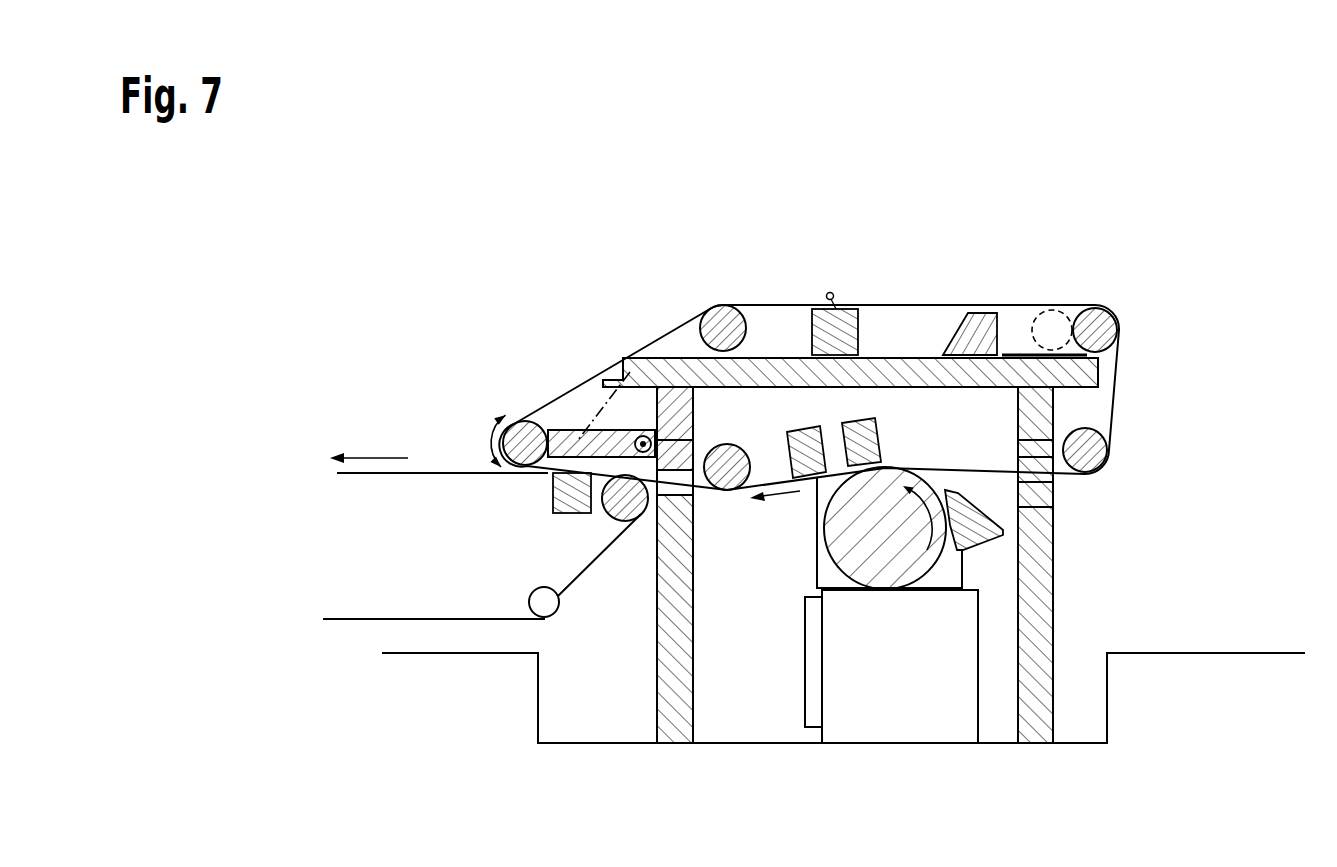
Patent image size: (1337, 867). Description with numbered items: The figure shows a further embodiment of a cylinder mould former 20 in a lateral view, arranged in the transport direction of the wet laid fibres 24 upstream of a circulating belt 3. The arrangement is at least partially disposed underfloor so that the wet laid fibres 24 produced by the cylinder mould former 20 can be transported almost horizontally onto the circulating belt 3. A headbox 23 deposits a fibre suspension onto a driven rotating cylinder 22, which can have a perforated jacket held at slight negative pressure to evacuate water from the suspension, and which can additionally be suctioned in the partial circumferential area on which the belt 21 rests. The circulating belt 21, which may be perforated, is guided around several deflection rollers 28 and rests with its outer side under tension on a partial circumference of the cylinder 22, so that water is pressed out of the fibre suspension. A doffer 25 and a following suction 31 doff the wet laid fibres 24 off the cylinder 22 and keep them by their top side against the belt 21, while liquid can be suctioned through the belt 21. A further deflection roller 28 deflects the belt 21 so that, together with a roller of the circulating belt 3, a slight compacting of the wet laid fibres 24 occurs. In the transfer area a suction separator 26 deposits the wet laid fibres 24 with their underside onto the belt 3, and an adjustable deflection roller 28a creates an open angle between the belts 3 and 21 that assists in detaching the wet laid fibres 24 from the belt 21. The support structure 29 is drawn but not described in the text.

The circulating belt 3 is at (348, 621).
The cylinder mould former 20 is at (1234, 236).
The belt 21 is at (945, 305).
The cylinder 22 is at (920, 552).
The headbox 23 is at (990, 528).
The wet laid fibres 24 is at (932, 482).
The doffer 25 is at (862, 445).
The suction separator 26 is at (568, 500).
The deflection roller 28 is at (706, 318).
The deflection roller 28a is at (522, 432).
The support frame / pillar 29 is at (1040, 627).
The suction 31 is at (805, 445).